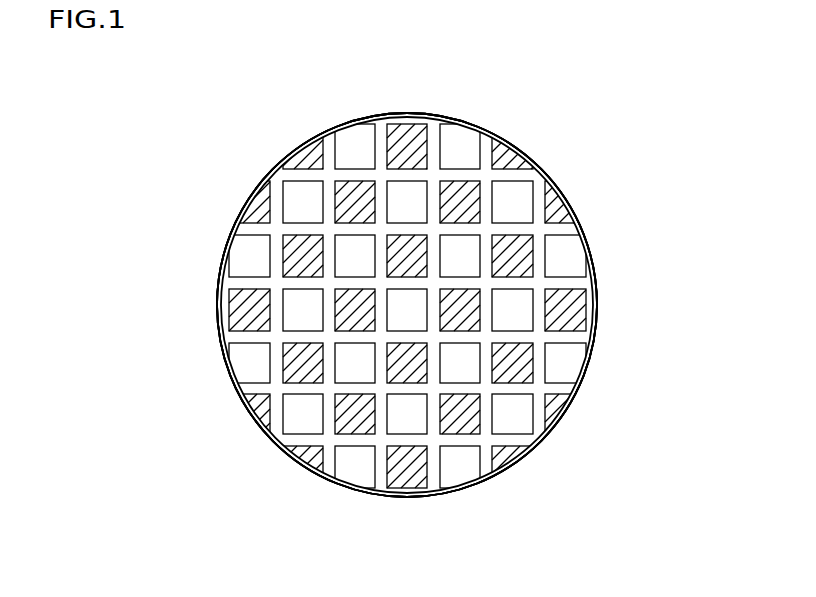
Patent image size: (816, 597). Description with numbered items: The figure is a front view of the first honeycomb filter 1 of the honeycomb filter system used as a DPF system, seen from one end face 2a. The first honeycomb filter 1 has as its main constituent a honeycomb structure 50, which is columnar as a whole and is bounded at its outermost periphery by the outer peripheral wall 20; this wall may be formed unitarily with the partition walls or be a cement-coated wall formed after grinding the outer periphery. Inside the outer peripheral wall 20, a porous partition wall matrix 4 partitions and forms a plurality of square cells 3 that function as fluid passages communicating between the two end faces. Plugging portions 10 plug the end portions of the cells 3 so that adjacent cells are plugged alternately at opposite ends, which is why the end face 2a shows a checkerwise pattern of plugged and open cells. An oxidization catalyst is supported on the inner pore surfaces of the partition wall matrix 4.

The first honeycomb filter 1 is at (205, 239).
The honeycomb structure 50 is at (407, 305).
The end face 2a is at (559, 161).
The cell 3 is at (310, 218).
The partition wall matrix 4 is at (498, 206).
The plugging portion 10 is at (298, 360).
The outer peripheral wall 20 is at (592, 265).